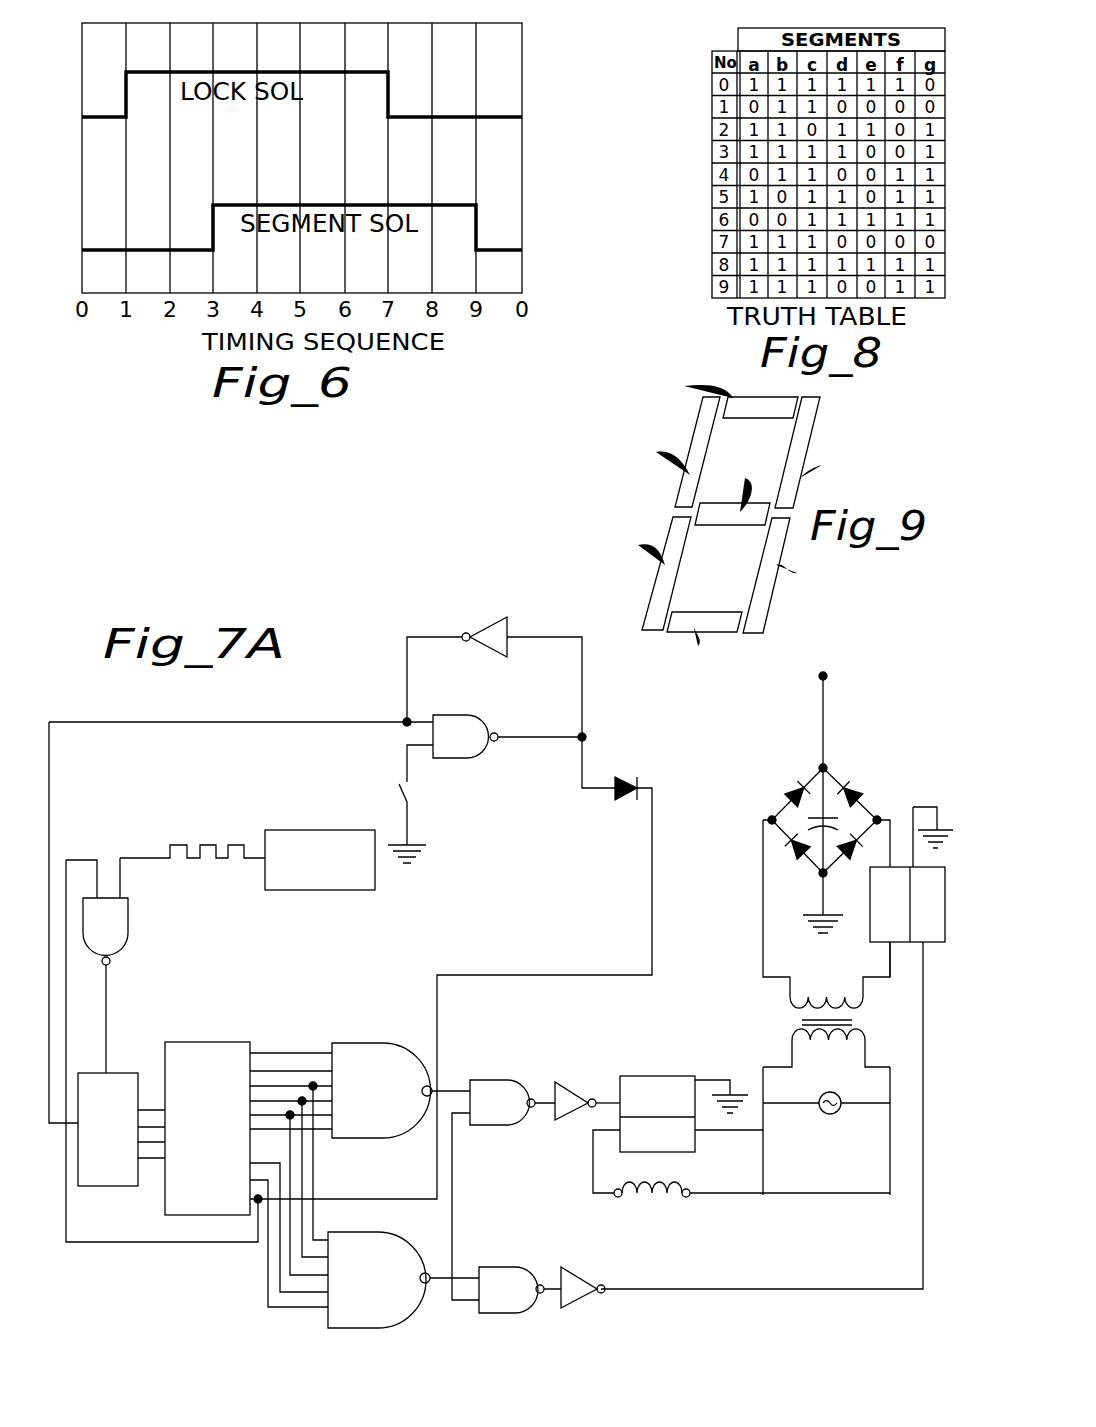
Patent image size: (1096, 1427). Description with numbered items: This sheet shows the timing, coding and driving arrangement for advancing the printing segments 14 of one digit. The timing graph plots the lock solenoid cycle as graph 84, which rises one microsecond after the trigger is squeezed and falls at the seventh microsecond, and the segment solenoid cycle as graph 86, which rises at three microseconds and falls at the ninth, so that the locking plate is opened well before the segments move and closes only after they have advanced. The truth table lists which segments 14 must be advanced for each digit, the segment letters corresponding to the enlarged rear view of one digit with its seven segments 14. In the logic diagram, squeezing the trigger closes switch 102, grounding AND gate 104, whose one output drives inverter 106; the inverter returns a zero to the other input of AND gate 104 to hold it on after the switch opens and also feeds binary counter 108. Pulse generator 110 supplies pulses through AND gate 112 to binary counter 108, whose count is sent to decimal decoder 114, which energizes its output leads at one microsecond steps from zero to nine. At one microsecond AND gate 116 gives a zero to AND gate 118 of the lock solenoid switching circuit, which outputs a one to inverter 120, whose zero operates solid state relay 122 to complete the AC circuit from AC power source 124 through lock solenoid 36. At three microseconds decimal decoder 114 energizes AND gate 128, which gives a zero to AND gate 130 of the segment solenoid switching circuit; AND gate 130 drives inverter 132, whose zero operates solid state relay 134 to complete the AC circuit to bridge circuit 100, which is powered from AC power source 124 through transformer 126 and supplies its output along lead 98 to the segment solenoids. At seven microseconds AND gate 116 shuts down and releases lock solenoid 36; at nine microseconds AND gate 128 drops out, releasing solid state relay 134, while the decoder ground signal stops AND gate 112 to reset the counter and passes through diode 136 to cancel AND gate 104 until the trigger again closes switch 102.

In FIG. 6, the graph 84 is at (374, 72).
In FIG. 6, the graph 86 is at (281, 205).
In FIG. 9, the printing segment 14 is at (812, 400).
In FIG. 7A, the lock solenoid 36 is at (648, 1196).
In FIG. 7A, the lead 98 is at (824, 713).
In FIG. 7A, the bridge circuit 100 is at (774, 780).
In FIG. 7A, the switch 102 is at (397, 783).
In FIG. 7A, the AND gate 104 is at (468, 724).
In FIG. 7A, the inverter 106 is at (488, 630).
In FIG. 7A, the binary counter 108 is at (98, 1178).
In FIG. 7A, the pulse generator 110 is at (290, 835).
In FIG. 7A, the AND gate 112 is at (122, 913).
In FIG. 7A, the decimal decoder 114 is at (197, 1048).
In FIG. 7A, the AND gate 116 is at (362, 1045).
In FIG. 7A, the AND gate 118 is at (483, 1085).
In FIG. 7A, the inverter 120 is at (568, 1088).
In FIG. 7A, the solid state relay 122 is at (680, 1078).
In FIG. 7A, the AC power source 124 is at (822, 1115).
In FIG. 7A, the transformer 126 is at (800, 1021).
In FIG. 7A, the AND gate 128 is at (395, 1305).
In FIG. 7A, the AND gate 130 is at (493, 1275).
In FIG. 7A, the inverter 132 is at (588, 1282).
In FIG. 7A, the solid state relay 134 is at (938, 950).
In FIG. 7A, the diode 136 is at (627, 777).